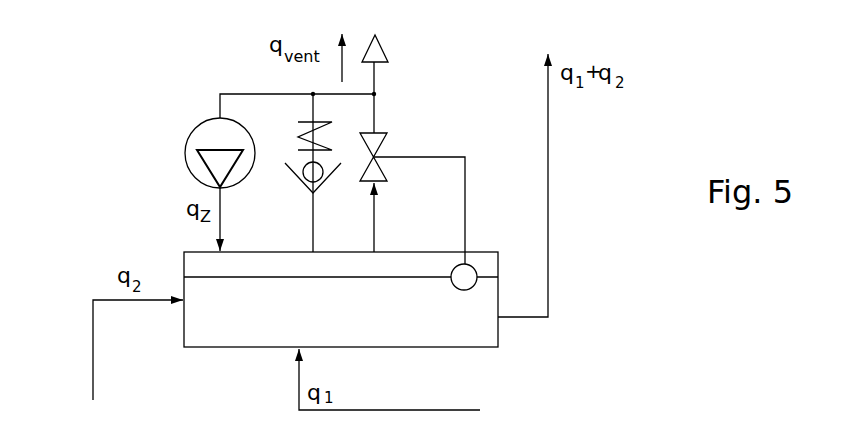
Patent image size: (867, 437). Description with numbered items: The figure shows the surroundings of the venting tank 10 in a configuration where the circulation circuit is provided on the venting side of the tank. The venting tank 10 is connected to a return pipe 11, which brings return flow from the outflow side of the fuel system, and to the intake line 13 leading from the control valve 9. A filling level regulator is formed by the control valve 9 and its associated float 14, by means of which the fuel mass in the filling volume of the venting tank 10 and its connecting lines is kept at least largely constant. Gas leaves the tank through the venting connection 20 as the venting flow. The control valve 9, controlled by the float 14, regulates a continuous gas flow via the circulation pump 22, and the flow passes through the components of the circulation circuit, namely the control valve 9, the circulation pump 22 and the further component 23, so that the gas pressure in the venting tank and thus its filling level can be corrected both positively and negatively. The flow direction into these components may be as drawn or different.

The control valve 9 is at (385, 142).
The venting tank 10 is at (230, 348).
The return pipe 11 is at (92, 357).
The intake line 13 is at (423, 407).
The float 14 is at (455, 288).
The venting connection 20 is at (376, 215).
The circulation pump 22 is at (186, 145).
The component of the circulation circuit 23 is at (292, 171).